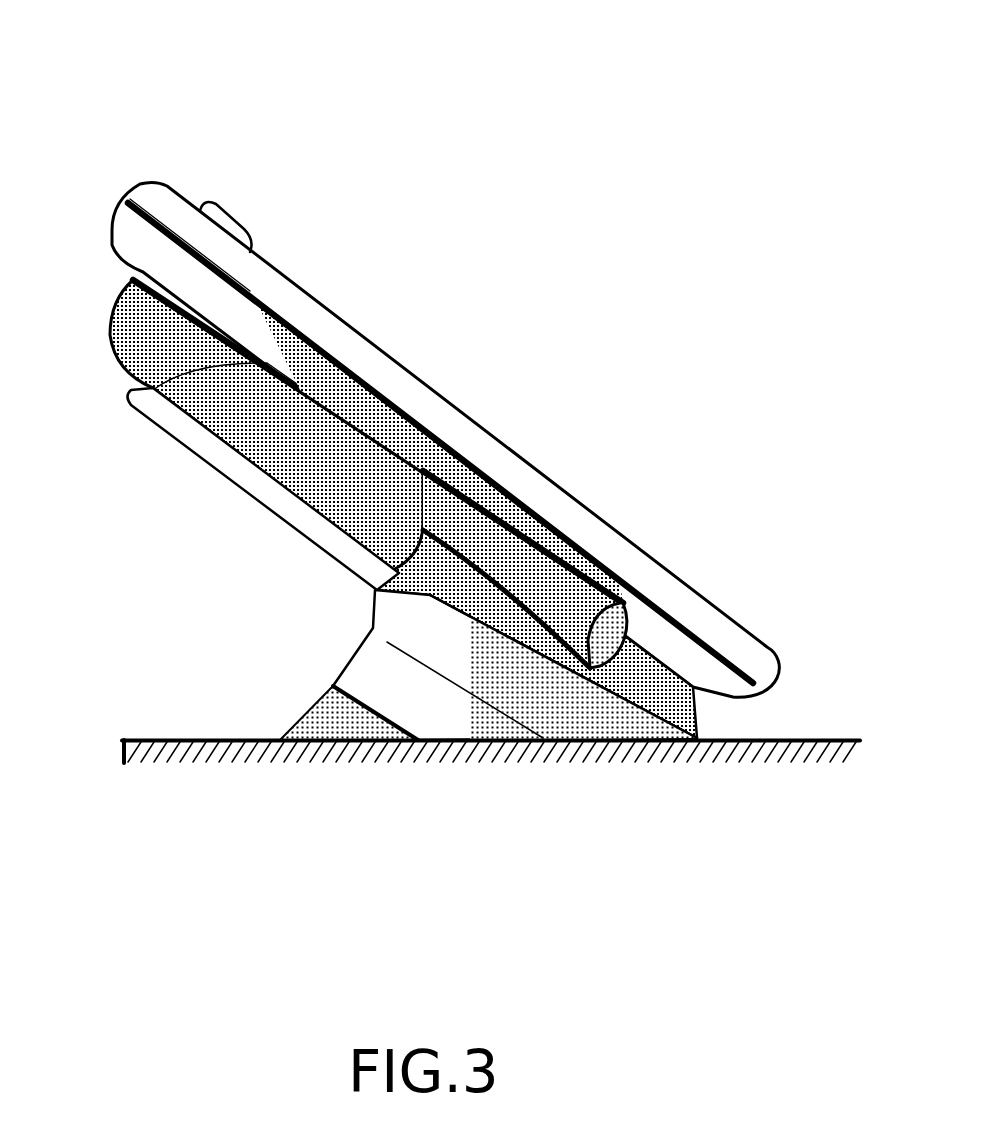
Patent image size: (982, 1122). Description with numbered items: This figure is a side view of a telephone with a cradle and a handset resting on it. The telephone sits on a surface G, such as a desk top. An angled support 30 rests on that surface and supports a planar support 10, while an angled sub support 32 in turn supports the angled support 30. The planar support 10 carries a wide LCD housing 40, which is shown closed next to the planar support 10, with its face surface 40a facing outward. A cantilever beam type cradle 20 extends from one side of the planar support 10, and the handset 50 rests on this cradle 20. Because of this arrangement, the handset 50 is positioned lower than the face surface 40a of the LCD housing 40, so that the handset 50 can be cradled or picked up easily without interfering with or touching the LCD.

The planar support 10 is at (264, 516).
The cantilever beam type cradle 20 is at (374, 509).
The angled support 30 is at (515, 753).
The angled sub support 32 is at (325, 800).
The LCD housing 40 is at (445, 350).
The face surface 40a is at (440, 443).
The handset 50 is at (442, 486).
The surface G is at (474, 714).